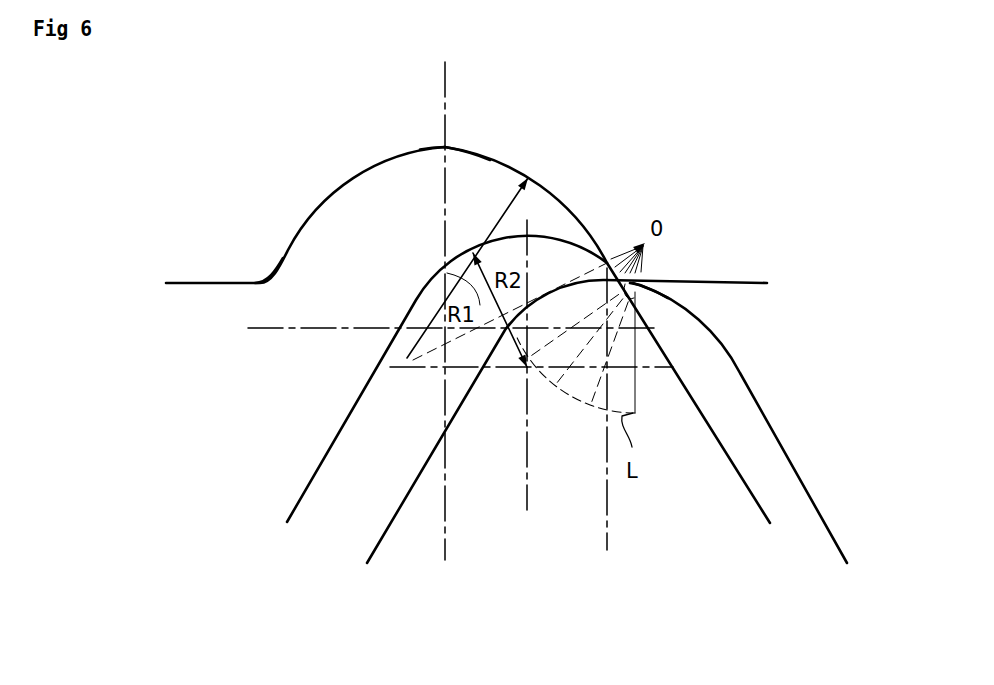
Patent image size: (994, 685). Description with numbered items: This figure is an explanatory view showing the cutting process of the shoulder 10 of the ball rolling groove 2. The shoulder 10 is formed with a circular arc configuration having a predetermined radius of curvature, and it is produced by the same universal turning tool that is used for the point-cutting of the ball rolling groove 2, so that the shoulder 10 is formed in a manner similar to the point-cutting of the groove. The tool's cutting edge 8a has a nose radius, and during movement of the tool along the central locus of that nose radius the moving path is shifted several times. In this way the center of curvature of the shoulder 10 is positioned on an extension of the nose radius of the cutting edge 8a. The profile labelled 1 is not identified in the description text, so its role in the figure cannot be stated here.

The seal lip 1 is at (268, 200).
The ball rolling groove 2 is at (480, 158).
The cutting edge 8a is at (357, 438).
The shoulder 10 is at (265, 277).